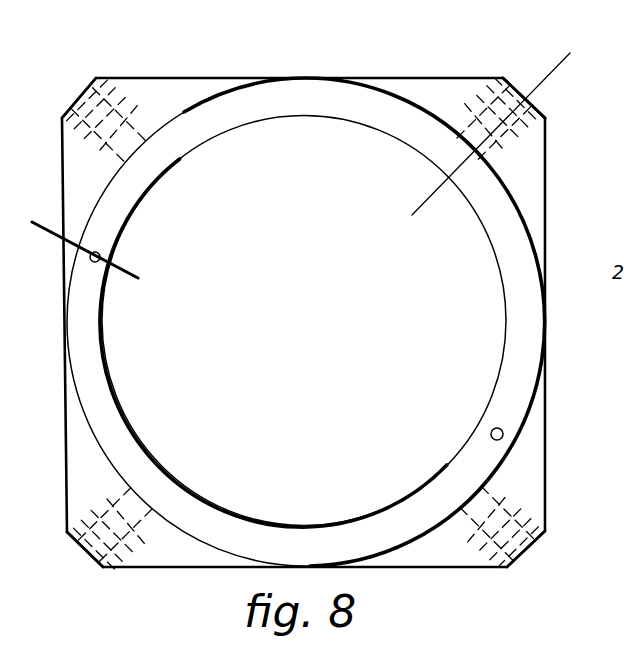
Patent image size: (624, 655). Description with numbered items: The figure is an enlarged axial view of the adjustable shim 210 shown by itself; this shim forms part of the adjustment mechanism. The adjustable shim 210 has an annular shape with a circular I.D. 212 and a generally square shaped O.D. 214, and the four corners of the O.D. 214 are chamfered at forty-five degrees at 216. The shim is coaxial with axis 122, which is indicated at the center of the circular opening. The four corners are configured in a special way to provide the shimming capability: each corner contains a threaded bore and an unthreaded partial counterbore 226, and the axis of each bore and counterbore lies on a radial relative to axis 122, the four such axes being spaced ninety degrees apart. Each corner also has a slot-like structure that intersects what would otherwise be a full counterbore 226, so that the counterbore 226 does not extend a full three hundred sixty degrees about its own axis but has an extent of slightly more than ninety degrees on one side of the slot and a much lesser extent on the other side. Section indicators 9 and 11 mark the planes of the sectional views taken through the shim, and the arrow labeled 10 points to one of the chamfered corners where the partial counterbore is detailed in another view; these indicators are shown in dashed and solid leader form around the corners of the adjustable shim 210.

The adjustable shim 210 is at (318, 78).
The circular I.D. 212 is at (330, 117).
The generally square shaped O.D. 214 is at (178, 112).
The 45° chamfered corners 216 is at (96, 79).
The unthreaded partial counterbore 226 is at (108, 125).
The axis 122 is at (305, 320).
The assembly 10 is at (517, 81).
The section line 9- 9 is at (593, 78).
The section line 11- 11 is at (158, 245).